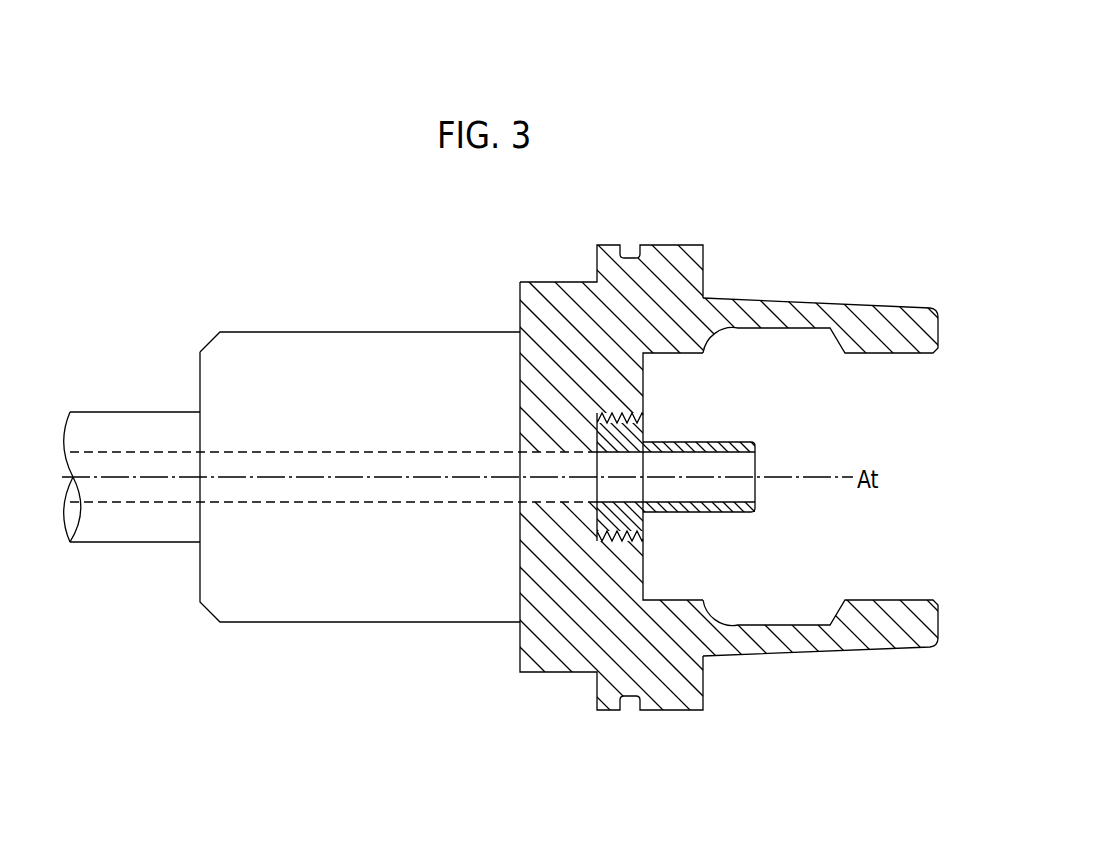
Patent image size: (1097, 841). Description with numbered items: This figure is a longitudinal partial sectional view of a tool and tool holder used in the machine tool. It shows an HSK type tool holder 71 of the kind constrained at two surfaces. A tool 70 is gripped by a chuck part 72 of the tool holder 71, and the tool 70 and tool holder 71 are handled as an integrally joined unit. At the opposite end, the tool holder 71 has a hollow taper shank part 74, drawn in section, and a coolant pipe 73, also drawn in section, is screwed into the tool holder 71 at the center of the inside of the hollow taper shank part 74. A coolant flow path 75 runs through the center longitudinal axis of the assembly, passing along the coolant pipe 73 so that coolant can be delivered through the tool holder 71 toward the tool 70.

The tool 70 is at (165, 427).
The tool holder 71 is at (548, 272).
The chuck part 72 is at (343, 350).
The coolant pipe 73 is at (745, 437).
The taper shank part 74 is at (797, 300).
The coolant flow path 75 is at (665, 490).